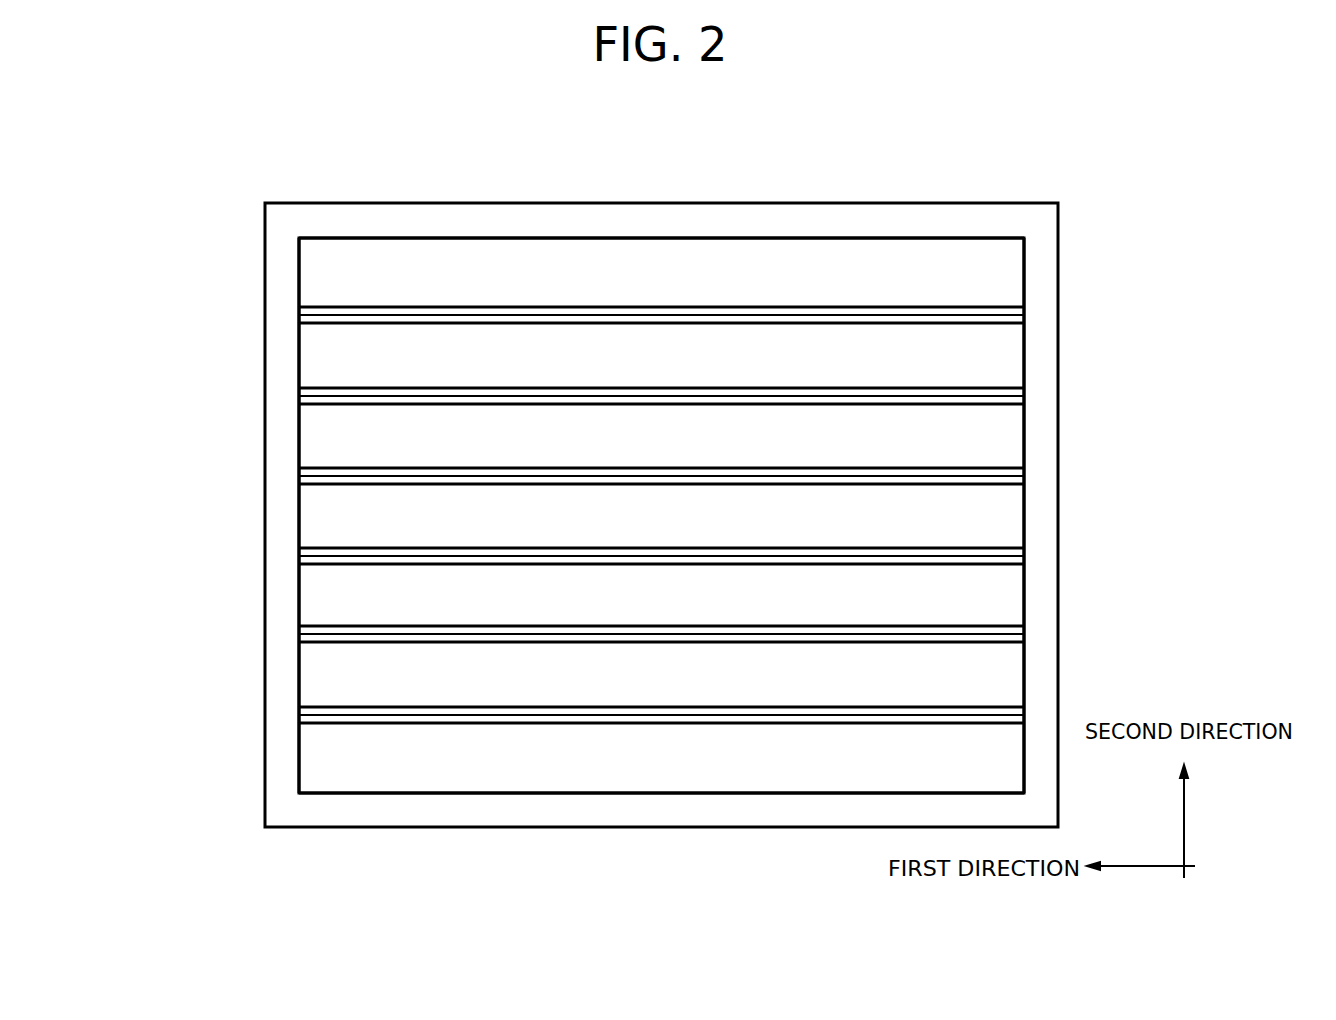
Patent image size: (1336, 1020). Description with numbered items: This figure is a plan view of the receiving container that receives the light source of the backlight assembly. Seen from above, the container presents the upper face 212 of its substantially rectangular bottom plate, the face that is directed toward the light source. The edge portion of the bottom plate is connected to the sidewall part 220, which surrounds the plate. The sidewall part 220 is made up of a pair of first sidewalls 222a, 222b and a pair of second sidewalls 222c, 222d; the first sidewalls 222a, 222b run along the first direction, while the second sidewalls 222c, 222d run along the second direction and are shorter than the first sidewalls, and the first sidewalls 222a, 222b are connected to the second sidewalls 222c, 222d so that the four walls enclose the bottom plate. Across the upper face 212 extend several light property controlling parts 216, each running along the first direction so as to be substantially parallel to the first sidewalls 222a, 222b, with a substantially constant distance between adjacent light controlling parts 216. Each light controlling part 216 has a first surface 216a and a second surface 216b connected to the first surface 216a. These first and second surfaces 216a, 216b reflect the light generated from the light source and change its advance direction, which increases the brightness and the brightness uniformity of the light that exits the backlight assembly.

The upper face 212 is at (599, 258).
The light property controlling part 216 is at (566, 429).
The first surface 216a is at (300, 307).
The second surface 216b is at (300, 323).
The sidewall part 220 is at (1024, 297).
The first sidewall 222a is at (402, 238).
The first sidewall 222b is at (420, 792).
The second sidewall 222c is at (300, 440).
The second sidewall 222d is at (1024, 425).